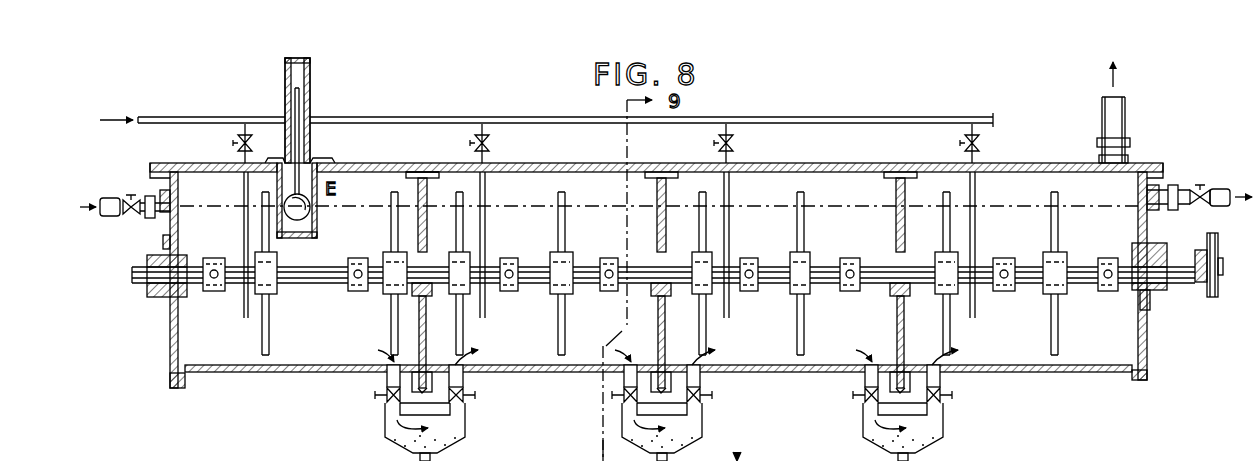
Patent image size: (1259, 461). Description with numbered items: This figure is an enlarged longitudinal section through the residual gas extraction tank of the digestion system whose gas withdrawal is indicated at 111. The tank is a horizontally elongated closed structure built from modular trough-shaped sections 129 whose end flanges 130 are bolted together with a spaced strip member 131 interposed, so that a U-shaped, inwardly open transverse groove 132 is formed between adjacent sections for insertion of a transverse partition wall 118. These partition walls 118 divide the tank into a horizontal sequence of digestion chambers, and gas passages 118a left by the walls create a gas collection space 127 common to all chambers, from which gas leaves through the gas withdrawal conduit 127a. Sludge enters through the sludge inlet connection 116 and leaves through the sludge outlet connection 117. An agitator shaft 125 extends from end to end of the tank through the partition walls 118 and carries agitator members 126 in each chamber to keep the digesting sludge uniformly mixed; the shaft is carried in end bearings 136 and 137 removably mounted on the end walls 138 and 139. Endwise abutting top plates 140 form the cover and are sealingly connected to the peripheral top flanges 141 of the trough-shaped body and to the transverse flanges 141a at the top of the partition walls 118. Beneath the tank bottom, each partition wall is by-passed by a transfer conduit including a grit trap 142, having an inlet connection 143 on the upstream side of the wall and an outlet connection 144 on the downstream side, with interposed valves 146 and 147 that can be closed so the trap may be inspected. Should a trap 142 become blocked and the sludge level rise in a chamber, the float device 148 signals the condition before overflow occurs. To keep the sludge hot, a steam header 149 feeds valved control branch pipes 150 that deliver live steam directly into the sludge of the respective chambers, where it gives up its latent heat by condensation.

The gas withdrawal 111 is at (691, 450).
The sludge inlet connection 116 is at (112, 197).
The sludge outlet connection 117 is at (1222, 188).
The transverse partition walls 118 is at (427, 214).
The gas passages 118a is at (408, 178).
The agitator shaft 125 is at (132, 272).
The agitator members 126 is at (262, 332).
The gas collection space 127 is at (612, 188).
The gas withdrawal conduit 127a is at (1125, 112).
The trough-shaped sections 129 is at (280, 372).
The end flanges 130 is at (400, 417).
The strip member 131 is at (466, 420).
The transverse groove 132 is at (428, 374).
The end bearing 136 is at (150, 300).
The end bearing 137 is at (1152, 292).
The end wall 138 is at (170, 355).
The end wall 139 is at (1147, 348).
The top plates 140 is at (197, 165).
The peripheral top flanges 141 is at (152, 172).
The transverse flanges 141a is at (425, 174).
The grit trap 142 is at (393, 447).
The inlet connection 143 is at (380, 398).
The outlet connection 144 is at (466, 400).
The interposed valve 146 is at (388, 390).
The interposed valve 147 is at (463, 392).
The float device 148 is at (310, 152).
The steam header 149 is at (857, 116).
The valved control branch pipes 150 is at (244, 230).